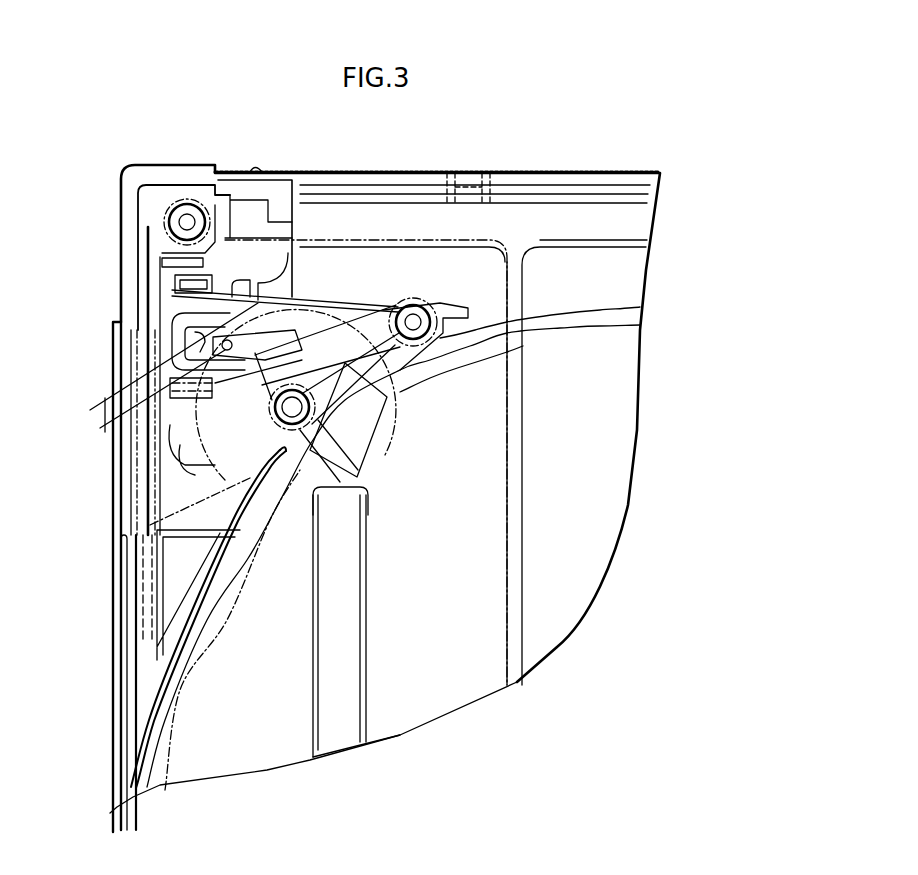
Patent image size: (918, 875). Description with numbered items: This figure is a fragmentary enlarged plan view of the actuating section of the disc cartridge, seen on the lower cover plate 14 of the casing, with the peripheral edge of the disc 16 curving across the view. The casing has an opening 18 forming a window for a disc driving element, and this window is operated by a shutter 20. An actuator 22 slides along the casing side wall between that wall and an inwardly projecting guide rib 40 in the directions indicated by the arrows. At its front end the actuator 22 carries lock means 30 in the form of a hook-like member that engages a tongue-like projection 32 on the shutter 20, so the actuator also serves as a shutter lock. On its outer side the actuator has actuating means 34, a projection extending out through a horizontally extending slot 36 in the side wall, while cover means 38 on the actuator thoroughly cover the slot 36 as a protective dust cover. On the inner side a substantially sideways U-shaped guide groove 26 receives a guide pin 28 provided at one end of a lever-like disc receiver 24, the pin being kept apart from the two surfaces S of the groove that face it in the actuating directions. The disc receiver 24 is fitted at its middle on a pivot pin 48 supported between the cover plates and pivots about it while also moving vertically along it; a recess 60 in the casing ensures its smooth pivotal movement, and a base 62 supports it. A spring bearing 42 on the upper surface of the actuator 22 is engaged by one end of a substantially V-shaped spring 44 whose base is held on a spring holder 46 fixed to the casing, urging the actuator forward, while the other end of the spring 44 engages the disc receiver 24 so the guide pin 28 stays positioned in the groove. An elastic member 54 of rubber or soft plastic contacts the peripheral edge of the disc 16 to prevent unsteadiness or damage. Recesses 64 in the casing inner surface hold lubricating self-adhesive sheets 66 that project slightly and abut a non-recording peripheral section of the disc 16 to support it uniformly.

The lower cover plate 14 is at (112, 677).
The disc 16 is at (150, 760).
The opening 18 is at (524, 452).
The shutter 20 is at (470, 170).
The actuator 22 is at (258, 176).
The disc receiver 24 is at (385, 463).
The guide groove 26 is at (165, 316).
The guide pin 28 is at (233, 345).
The lock means 30 is at (277, 184).
The tongue-like projection 32 is at (270, 172).
The actuating means 34 is at (172, 358).
The slot 36 is at (135, 470).
The cover means 38 is at (148, 229).
The guide rib 40 is at (125, 600).
The spring bearing 42 is at (175, 287).
The V-shaped spring 44 is at (362, 300).
The spring holder 46 is at (411, 297).
The pivot pin 48 is at (287, 430).
The surfaces of the guide groove S is at (165, 367).
The elastic member 54 is at (370, 492).
The recess 60 is at (398, 432).
The base 62 is at (270, 503).
The recess 64 is at (313, 672).
The lubricating self-adhesive sheet 66 is at (314, 594).